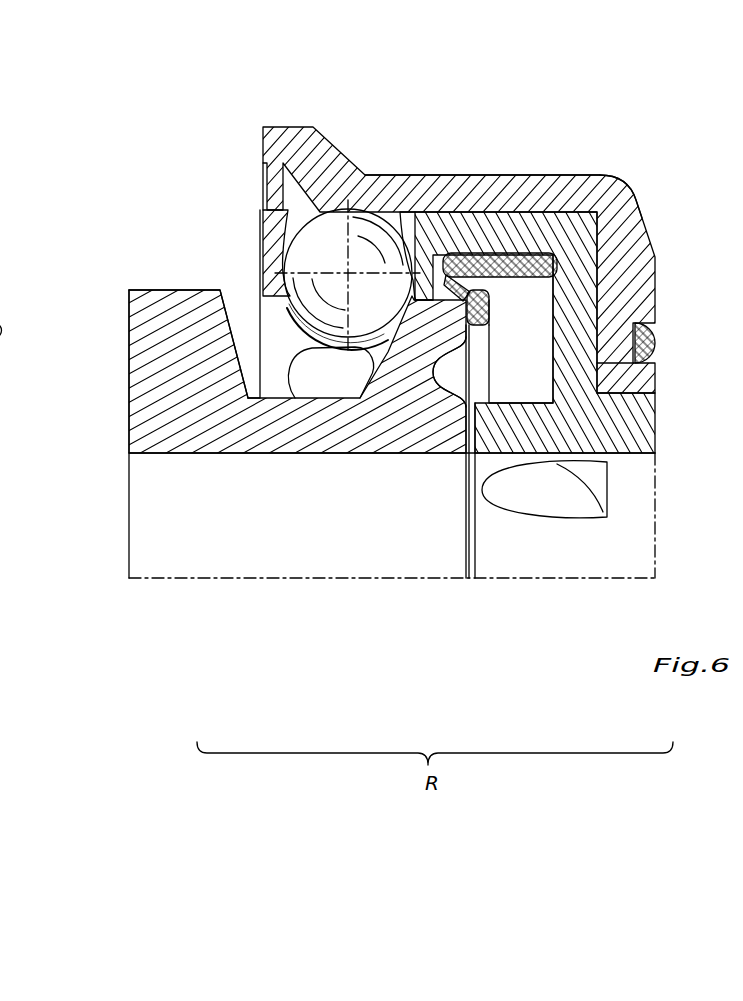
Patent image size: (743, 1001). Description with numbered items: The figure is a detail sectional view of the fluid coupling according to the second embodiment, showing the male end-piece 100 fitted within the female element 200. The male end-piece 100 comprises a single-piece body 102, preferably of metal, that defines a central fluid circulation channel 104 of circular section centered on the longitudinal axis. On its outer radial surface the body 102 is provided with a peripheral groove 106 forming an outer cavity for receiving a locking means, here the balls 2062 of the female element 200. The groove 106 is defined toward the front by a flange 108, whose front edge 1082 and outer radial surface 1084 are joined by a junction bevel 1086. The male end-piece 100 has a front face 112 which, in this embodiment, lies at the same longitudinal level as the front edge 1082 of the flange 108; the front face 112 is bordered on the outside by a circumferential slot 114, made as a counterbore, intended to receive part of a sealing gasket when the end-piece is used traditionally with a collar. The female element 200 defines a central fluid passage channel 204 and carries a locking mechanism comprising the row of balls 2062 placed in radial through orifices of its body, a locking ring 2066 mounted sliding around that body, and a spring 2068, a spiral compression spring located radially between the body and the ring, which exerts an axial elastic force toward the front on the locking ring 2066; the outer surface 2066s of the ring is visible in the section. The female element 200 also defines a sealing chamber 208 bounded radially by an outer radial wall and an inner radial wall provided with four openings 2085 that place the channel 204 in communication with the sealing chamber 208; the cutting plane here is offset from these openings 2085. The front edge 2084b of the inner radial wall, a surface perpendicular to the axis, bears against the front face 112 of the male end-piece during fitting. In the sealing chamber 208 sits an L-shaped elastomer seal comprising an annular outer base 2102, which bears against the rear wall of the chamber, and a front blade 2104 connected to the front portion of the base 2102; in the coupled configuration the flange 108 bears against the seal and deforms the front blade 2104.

The male end-piece 100 is at (219, 622).
The body 102 is at (150, 416).
The central fluid circulation channel 104 is at (392, 434).
The peripheral groove 106 is at (247, 320).
The flange 108 is at (448, 228).
The front face 112 is at (477, 422).
The circumferential slot 114 is at (448, 375).
The female element 200 is at (588, 622).
The central fluid passage channel 204 is at (525, 515).
The sealing chamber 208 is at (521, 329).
The front edge of the flange 1082 is at (490, 323).
The outer radial surface of the flange 1084 is at (462, 292).
The junction bevel 1086 is at (545, 253).
The balls 2062 is at (327, 258).
The locking ring 2066 is at (520, 198).
The outer ring surface 2066s is at (384, 262).
The spring 2068 is at (656, 344).
The front edge of the inner radial wall 2084b is at (463, 439).
The openings 2085 is at (537, 491).
The annular outer base 2102 is at (626, 186).
The front blade 2104 is at (490, 307).